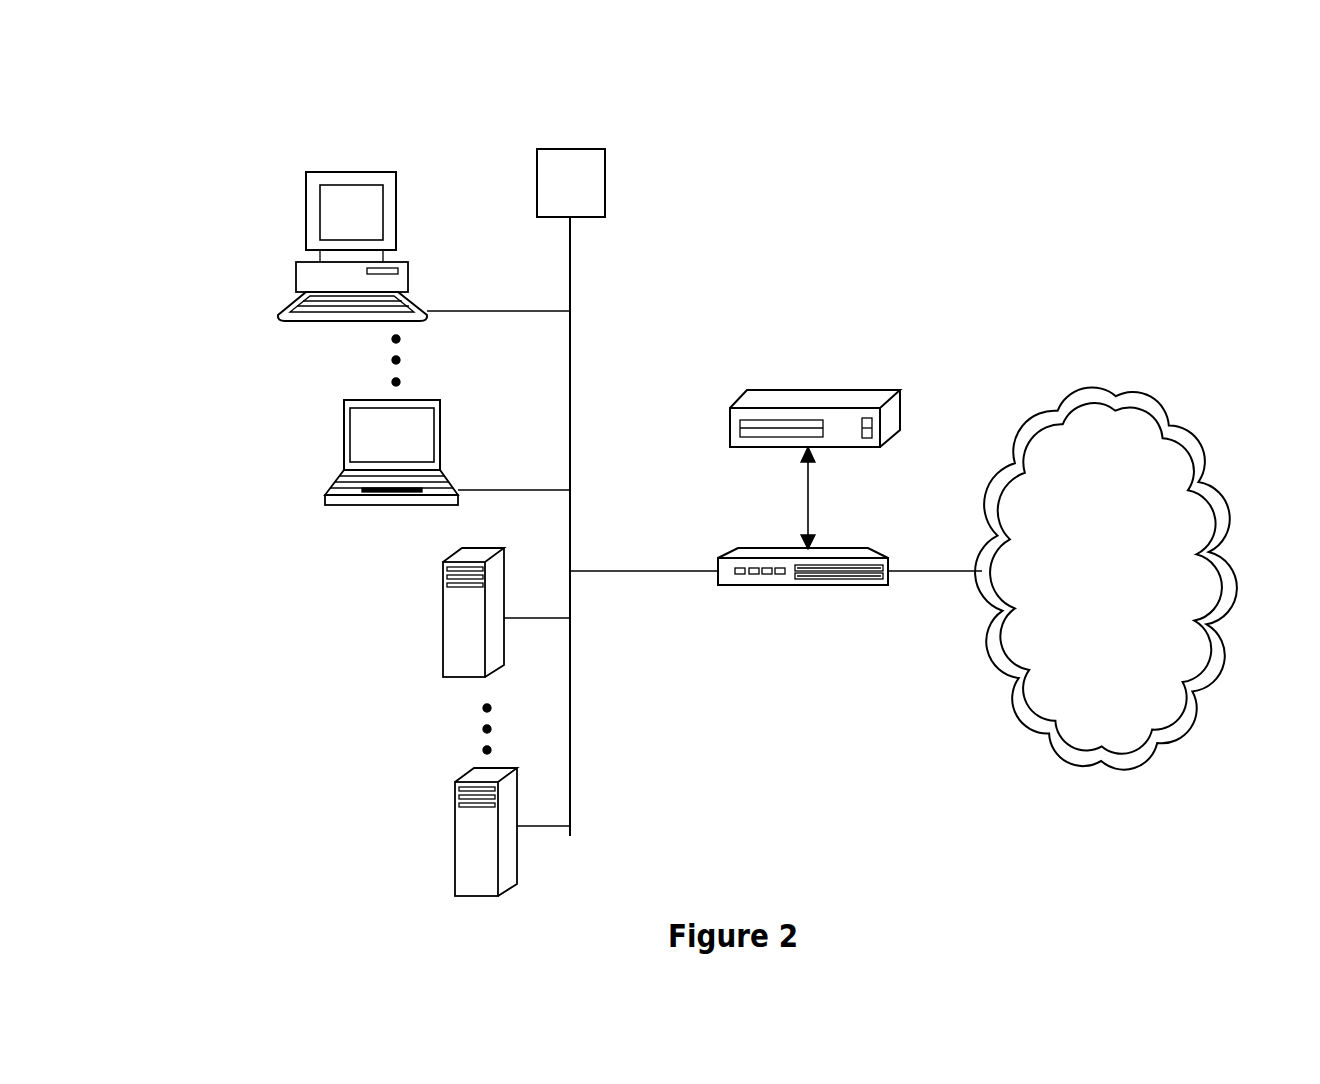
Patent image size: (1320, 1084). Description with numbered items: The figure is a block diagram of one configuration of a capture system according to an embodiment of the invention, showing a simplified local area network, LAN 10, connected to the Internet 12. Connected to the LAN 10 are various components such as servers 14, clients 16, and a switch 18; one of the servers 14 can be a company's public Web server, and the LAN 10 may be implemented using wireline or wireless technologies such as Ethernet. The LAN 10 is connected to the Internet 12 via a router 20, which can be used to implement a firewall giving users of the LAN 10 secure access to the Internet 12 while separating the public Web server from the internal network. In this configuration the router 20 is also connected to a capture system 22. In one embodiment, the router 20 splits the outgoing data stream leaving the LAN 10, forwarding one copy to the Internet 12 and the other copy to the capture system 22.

The local area network 10 is at (449, 526).
The Internet 12 is at (1106, 578).
The servers 14 is at (426, 643).
The clients 16 is at (278, 288).
The switch 18 is at (581, 137).
The router 20 is at (808, 596).
The capture system 22 is at (819, 380).